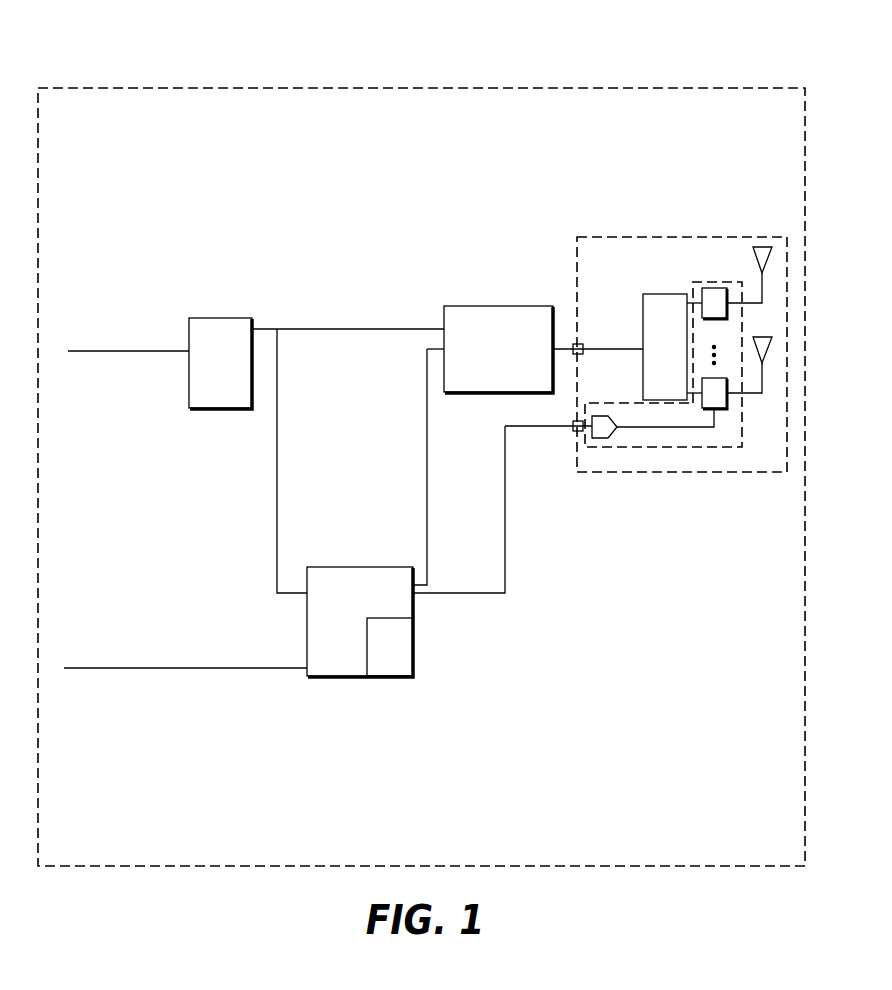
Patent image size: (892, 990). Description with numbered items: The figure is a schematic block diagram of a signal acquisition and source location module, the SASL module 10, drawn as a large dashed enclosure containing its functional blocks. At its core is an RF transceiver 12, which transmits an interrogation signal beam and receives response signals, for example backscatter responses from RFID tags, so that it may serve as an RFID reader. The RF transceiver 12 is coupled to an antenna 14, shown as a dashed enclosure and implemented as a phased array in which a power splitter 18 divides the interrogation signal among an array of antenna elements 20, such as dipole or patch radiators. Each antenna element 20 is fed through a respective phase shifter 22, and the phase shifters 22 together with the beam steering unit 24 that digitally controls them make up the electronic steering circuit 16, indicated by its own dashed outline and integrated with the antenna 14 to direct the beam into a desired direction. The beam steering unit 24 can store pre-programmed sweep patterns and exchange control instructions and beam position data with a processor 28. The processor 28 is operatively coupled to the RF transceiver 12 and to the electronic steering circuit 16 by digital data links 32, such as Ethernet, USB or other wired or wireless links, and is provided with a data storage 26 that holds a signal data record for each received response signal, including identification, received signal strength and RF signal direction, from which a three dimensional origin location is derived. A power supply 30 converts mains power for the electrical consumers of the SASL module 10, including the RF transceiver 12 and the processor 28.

The SASL module 10 is at (360, 88).
The RF transceiver 12 is at (498, 349).
The antenna 14 is at (717, 237).
The electronic steering circuit 16 is at (698, 447).
The power splitter 18 is at (663, 294).
The antenna element 20 is at (765, 278).
The phase shifter 22 is at (713, 288).
The beam steering unit 24 is at (605, 438).
The data storage 26 is at (390, 647).
The processor 28 is at (360, 622).
The power supply 30 is at (220, 363).
The digital data link 32 is at (428, 508).